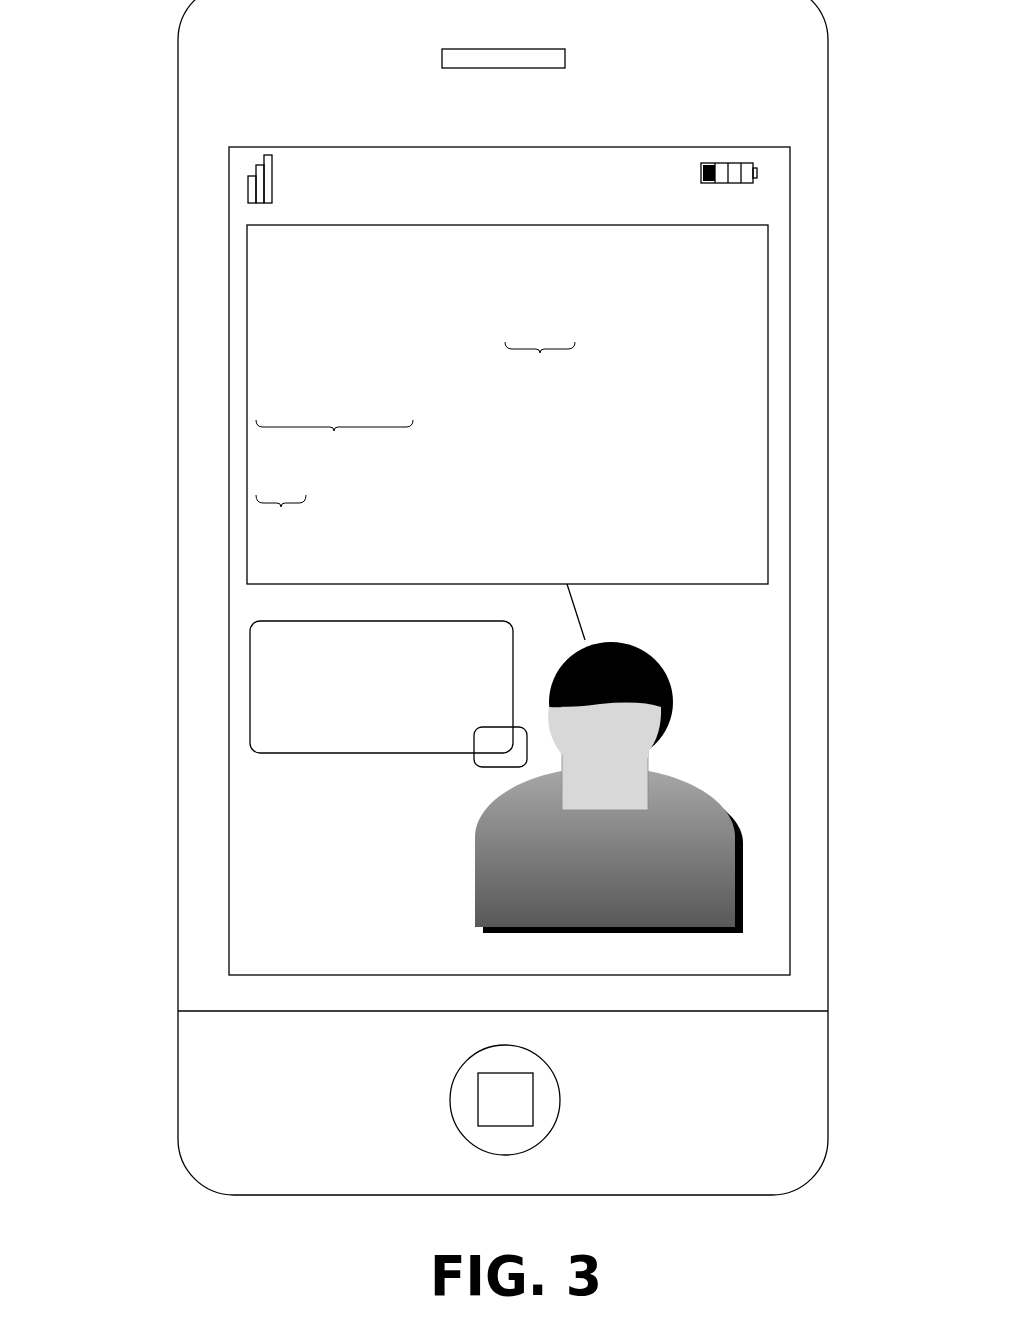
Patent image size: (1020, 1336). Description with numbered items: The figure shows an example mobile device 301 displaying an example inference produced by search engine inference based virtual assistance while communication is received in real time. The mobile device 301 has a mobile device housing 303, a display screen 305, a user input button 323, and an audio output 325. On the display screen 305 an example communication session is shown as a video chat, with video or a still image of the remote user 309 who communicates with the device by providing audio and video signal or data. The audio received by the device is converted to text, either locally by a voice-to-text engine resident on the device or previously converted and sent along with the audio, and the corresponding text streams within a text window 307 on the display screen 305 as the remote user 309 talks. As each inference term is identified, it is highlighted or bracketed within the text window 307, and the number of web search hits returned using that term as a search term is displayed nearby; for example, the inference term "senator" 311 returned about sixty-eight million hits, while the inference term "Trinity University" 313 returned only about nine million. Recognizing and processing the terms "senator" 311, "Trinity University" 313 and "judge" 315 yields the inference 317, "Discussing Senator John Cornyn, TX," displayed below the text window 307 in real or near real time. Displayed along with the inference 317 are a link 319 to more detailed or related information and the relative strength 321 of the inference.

The mobile device 301 is at (145, 156).
The mobile device housing 303 is at (192, 300).
The display screen 305 is at (782, 208).
The text window 307 is at (738, 330).
The remote user 309 is at (496, 862).
The inference term "senator" 311 is at (545, 318).
The inference term "Trinity University" 313 is at (343, 395).
The inference term "judge" 315 is at (296, 472).
The inference 317 is at (374, 650).
The link 319 is at (375, 728).
The relative strength 321 is at (482, 752).
The user input button 323 is at (485, 1097).
The audio output 325 is at (562, 52).